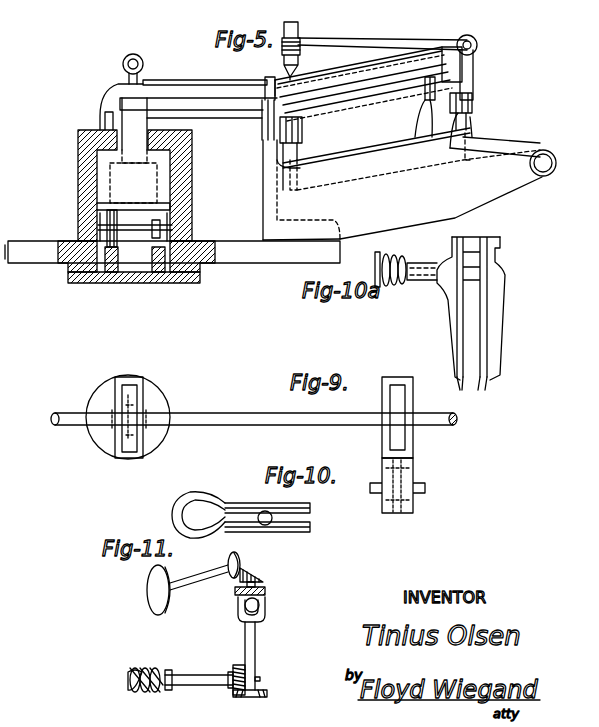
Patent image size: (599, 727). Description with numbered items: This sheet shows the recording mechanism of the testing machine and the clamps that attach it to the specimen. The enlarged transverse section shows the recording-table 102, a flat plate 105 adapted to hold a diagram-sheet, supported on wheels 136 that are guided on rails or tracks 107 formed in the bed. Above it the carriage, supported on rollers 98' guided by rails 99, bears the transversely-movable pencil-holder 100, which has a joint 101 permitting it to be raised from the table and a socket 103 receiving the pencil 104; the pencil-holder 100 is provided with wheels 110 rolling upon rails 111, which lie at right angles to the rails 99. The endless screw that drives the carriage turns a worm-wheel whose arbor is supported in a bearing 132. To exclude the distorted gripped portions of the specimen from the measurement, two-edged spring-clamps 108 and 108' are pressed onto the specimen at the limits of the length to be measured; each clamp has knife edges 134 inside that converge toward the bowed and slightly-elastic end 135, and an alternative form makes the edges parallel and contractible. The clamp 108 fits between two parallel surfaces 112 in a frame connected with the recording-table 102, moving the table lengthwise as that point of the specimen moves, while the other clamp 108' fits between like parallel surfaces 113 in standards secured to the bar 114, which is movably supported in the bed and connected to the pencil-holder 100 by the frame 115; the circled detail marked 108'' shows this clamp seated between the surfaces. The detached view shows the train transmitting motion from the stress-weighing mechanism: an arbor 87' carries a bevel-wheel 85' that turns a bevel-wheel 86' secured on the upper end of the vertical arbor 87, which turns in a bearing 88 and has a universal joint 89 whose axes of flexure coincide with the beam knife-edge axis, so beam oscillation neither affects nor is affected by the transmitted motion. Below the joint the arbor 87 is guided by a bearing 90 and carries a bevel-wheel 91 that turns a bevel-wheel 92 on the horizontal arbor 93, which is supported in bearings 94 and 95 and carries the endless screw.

In FIG. 11, the bevel-wheel 85' is at (227, 559).
In FIG. 11, the bevel-wheel 86' is at (271, 575).
In FIG. 11, the vertical arbor 87 is at (267, 637).
In FIG. 11, the arbor 87' is at (187, 583).
In FIG. 11, the bearing 88 is at (235, 593).
In FIG. 11, the universal joint 89 is at (266, 614).
In FIG. 11, the bearing 90 is at (262, 678).
In FIG. 11, the bevel-wheel 91 is at (265, 697).
In FIG. 11, the bevel-wheel 92 is at (236, 665).
In FIG. 11, the horizontal arbor 93 is at (205, 687).
In FIG. 11, the bearing 94 is at (185, 672).
In FIG. 11, the bearing 95 is at (228, 672).
In FIG. 5, the rollers 98' is at (543, 172).
In FIG. 5, the rails 99 is at (533, 145).
In FIG. 5, the pencil-holder 100 is at (388, 43).
In FIG. 5, the joint 101 is at (472, 45).
In FIG. 5, the recording-table 102 is at (460, 63).
In FIG. 5, the socket 103 is at (280, 70).
In FIG. 5, the pencil 104 is at (292, 78).
In FIG. 5, the flat plate 105 is at (358, 74).
In FIG. 5, the rails or tracks 107 is at (263, 148).
In FIG. 10A, the spring-clamp 108 is at (440, 308).
In FIG. 9, the spring-clamp 108 is at (406, 479).
In FIG. 10, the spring-clamp 108 is at (283, 499).
In FIG. 5, the spring-clamp 108' is at (138, 61).
In FIG. 10, the spring-clamp 108' is at (279, 537).
In FIG. 9, the bracket detail 108'' is at (254, 428).
In FIG. 5, the wheels 110 is at (302, 130).
In FIG. 5, the rails 111 is at (297, 147).
In FIG. 9, the parallel surfaces 112 is at (385, 378).
In FIG. 5, the parallel surfaces 113 is at (143, 70).
In FIG. 9, the parallel surfaces 113 is at (122, 390).
In FIG. 5, the bar 114 is at (133, 150).
In FIG. 5, the frame 115 is at (228, 116).
In FIG. 5, the bearing 132 is at (398, 70).
In FIG. 10A, the knife edges 134 is at (471, 390).
In FIG. 10, the knife edges 134 is at (312, 518).
In FIG. 10, the bowed and slightly-elastic end 135 is at (198, 504).
In FIG. 5, the wheels 136 is at (262, 140).